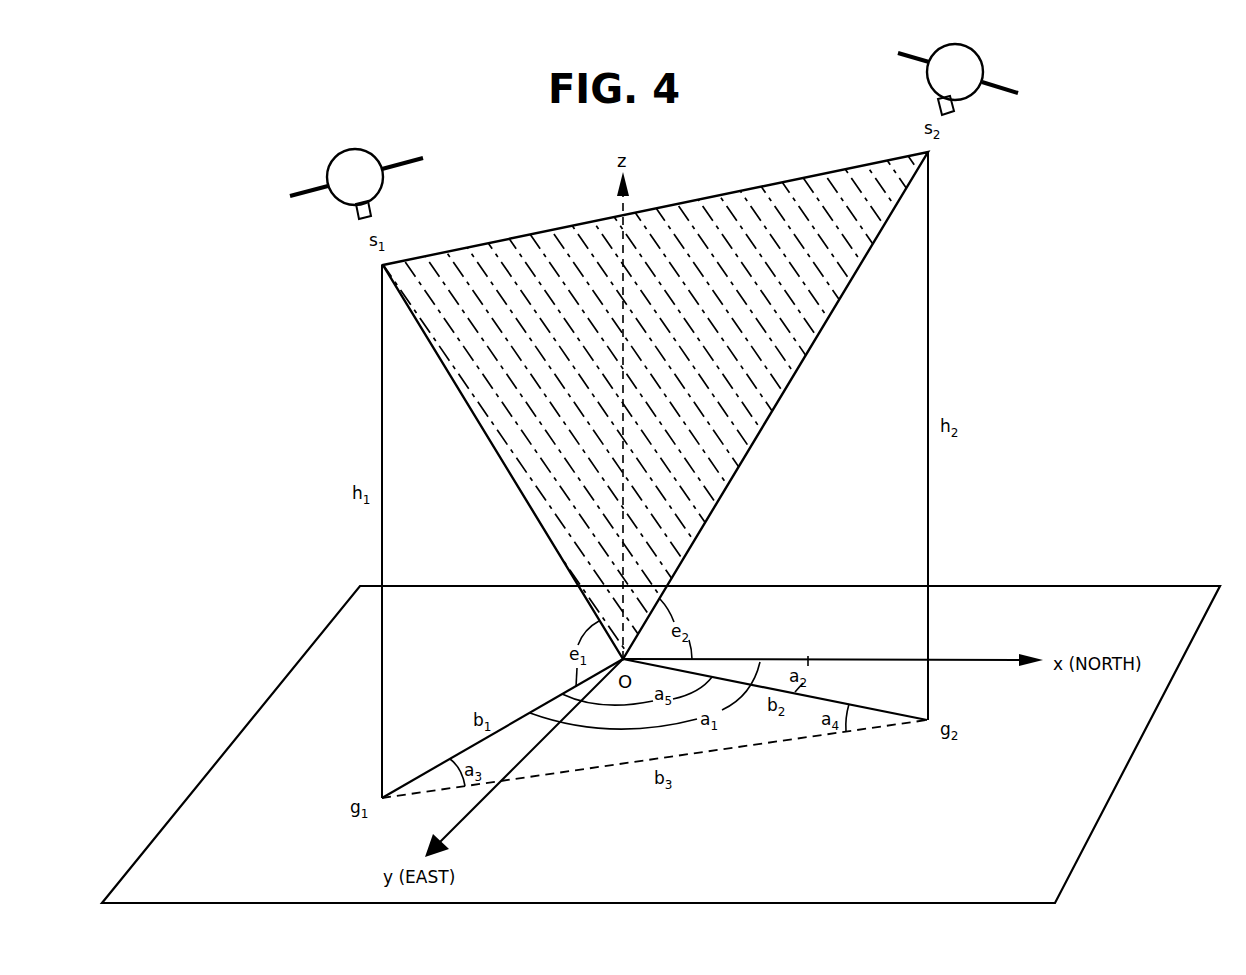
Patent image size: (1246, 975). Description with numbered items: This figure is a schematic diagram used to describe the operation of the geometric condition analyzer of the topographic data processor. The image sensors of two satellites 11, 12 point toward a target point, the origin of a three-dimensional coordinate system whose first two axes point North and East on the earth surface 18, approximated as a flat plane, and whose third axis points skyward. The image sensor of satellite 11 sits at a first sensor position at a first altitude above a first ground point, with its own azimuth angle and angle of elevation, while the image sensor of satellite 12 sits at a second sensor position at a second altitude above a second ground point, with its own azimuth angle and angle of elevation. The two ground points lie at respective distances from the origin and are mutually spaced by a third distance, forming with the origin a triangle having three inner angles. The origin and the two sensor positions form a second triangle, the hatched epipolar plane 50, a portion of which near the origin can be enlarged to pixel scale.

The satellite 11 is at (362, 149).
The satellite 12 is at (964, 46).
The earth surface 18 is at (1090, 586).
The epipolar plane 50 is at (733, 203).